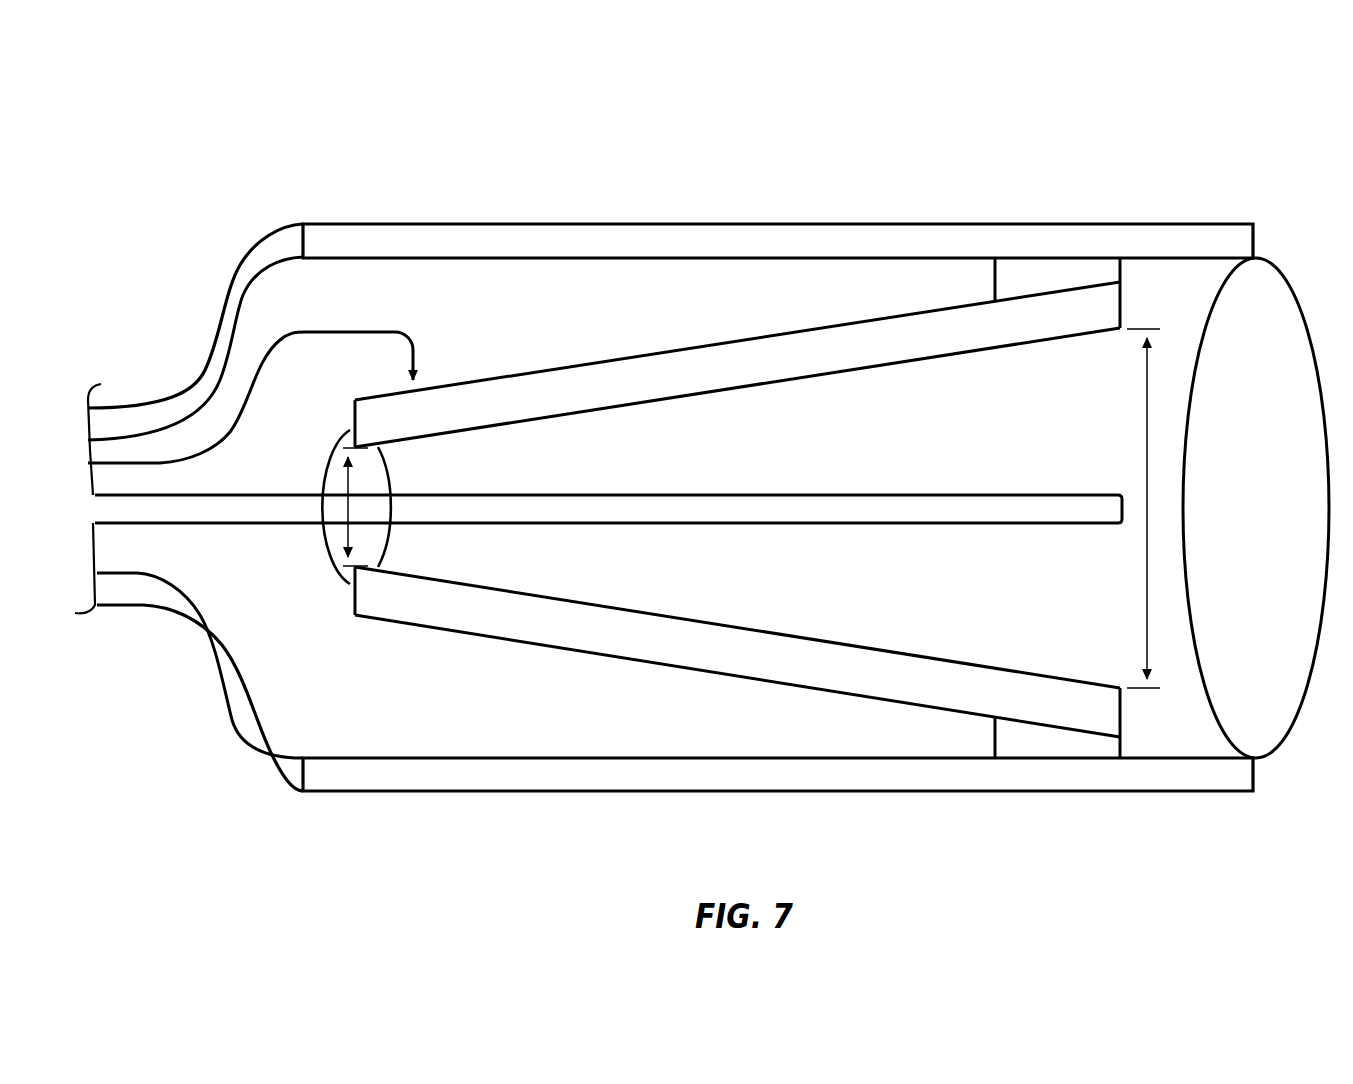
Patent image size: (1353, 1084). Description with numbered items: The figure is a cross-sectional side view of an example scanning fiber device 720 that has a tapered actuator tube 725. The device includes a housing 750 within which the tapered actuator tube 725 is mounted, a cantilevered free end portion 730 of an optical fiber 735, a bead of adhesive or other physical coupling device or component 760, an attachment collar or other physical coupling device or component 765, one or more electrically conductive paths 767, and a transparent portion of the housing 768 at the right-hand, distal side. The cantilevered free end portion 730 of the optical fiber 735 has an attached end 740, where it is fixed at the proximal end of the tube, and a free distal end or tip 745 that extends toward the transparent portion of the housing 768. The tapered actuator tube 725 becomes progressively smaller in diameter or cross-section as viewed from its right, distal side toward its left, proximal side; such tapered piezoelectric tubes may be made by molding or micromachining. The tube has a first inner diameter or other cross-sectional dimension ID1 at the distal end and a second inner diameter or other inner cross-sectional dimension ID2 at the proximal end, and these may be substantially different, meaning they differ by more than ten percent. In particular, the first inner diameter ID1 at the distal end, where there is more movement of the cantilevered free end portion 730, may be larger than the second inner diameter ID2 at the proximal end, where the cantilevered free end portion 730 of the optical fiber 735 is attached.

The scanning fiber device 720 is at (276, 160).
The housing 750 is at (527, 820).
The tapered actuator tube 725 is at (632, 647).
The electrically conductive paths 767 is at (328, 332).
The optical fiber 735 is at (193, 524).
The cantilevered free end portion 730 is at (850, 494).
The free distal end or tip 745 is at (1122, 510).
The attached end 740 is at (411, 480).
The bead of adhesive 760 is at (337, 573).
The attachment collar 765 is at (995, 274).
The transparent portion of the housing 768 is at (1276, 524).
The first inner diameter ID1 is at (1147, 410).
The second inner diameter ID2 is at (340, 480).